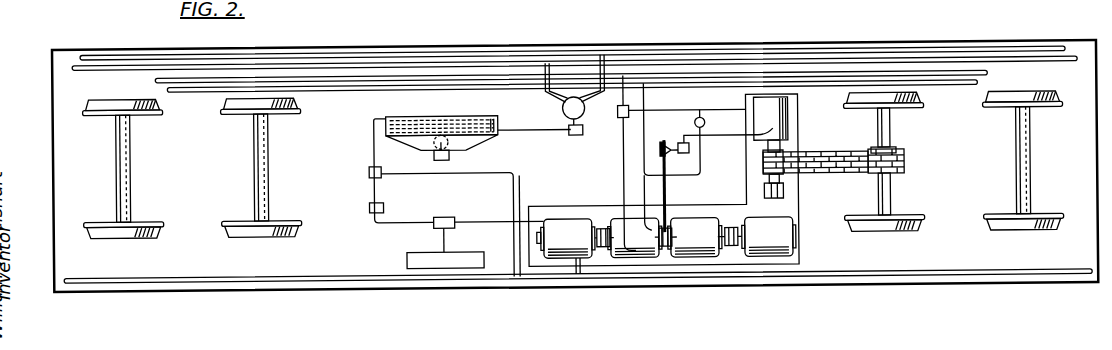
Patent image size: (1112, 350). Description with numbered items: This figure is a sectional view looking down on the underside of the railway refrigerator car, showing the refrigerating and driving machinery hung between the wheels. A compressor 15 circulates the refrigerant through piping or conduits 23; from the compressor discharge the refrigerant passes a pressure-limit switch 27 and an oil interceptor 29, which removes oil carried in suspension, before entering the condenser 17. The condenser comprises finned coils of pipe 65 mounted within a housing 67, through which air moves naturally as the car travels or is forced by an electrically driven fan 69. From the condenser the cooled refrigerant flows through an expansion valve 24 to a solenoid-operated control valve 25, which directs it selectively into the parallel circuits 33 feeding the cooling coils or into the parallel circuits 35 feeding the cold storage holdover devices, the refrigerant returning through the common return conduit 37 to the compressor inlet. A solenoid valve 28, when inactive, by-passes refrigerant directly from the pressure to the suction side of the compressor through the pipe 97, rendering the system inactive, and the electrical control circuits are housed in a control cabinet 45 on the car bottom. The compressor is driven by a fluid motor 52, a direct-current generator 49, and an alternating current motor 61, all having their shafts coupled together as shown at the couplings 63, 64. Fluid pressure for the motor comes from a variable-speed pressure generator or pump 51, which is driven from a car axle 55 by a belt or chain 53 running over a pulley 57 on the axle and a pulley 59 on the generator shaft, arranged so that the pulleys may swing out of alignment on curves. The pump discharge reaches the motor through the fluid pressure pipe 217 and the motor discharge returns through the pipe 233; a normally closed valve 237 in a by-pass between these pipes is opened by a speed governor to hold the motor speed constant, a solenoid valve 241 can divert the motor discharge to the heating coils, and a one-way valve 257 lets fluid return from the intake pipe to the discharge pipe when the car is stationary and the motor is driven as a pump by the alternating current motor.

The compressor 15 is at (558, 230).
The condenser 17 is at (418, 120).
The piping or conduits 23 is at (371, 144).
The expansion valve 24 is at (577, 140).
The control valve 25 is at (562, 117).
The pressure-limit switch 27 is at (444, 221).
The solenoid valve 28 is at (367, 175).
The oil interceptor 29 is at (367, 211).
The parallel circuits 33 is at (307, 66).
The parallel circuits 35 is at (383, 56).
The common return conduit 37 is at (312, 278).
The control cabinet 45 is at (407, 263).
The direct-current generator 49 is at (683, 259).
The fluid pressure generator or pump 51 is at (788, 120).
The fluid motor 52 is at (612, 257).
The belt or chain 53 is at (832, 160).
The car axle 55 is at (890, 136).
The pulley or sprocket 57 is at (905, 160).
The pulley or sprocket 59 is at (781, 184).
The alternating current motor 61 is at (790, 255).
The coupling 63 is at (599, 234).
The clutch coupling 64 is at (667, 238).
The coils of pipe 65 is at (441, 132).
The housing 67 is at (495, 122).
The fan 69 is at (450, 160).
The pipe 97 is at (520, 191).
The fluid pressure pipe 217 is at (719, 143).
The pipe 233 is at (611, 178).
The by-pass valve 237 is at (665, 145).
The solenoid valve 241 is at (617, 124).
The one-way valve 257 is at (705, 129).